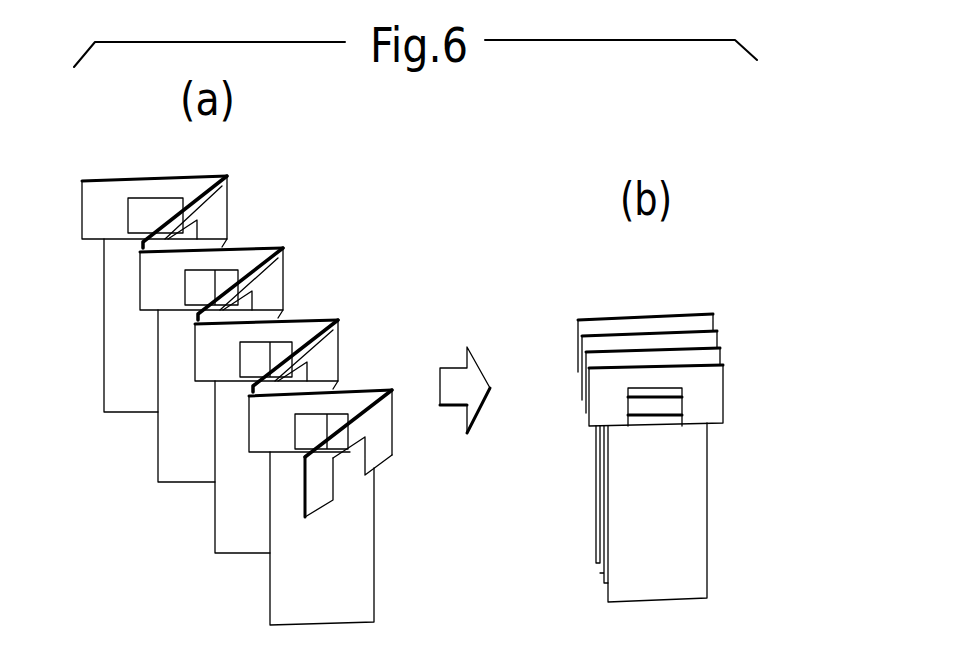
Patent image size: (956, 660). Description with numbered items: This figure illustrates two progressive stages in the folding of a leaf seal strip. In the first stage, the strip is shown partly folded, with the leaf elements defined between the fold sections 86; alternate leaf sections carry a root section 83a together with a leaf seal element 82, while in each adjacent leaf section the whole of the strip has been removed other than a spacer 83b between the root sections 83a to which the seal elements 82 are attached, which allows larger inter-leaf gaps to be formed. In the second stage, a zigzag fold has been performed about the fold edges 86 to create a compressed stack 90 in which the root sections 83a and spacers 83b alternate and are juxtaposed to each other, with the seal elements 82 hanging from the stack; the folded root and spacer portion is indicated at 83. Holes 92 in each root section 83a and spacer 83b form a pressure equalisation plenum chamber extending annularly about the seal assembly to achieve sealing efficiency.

The leaf seal element 82 is at (178, 465).
The fold section 86 is at (284, 270).
The root section 83a is at (375, 403).
The spacer 83b is at (383, 462).
The compressed stack 90 is at (732, 360).
The bent portion 83 is at (713, 393).
The hole 92 is at (648, 412).